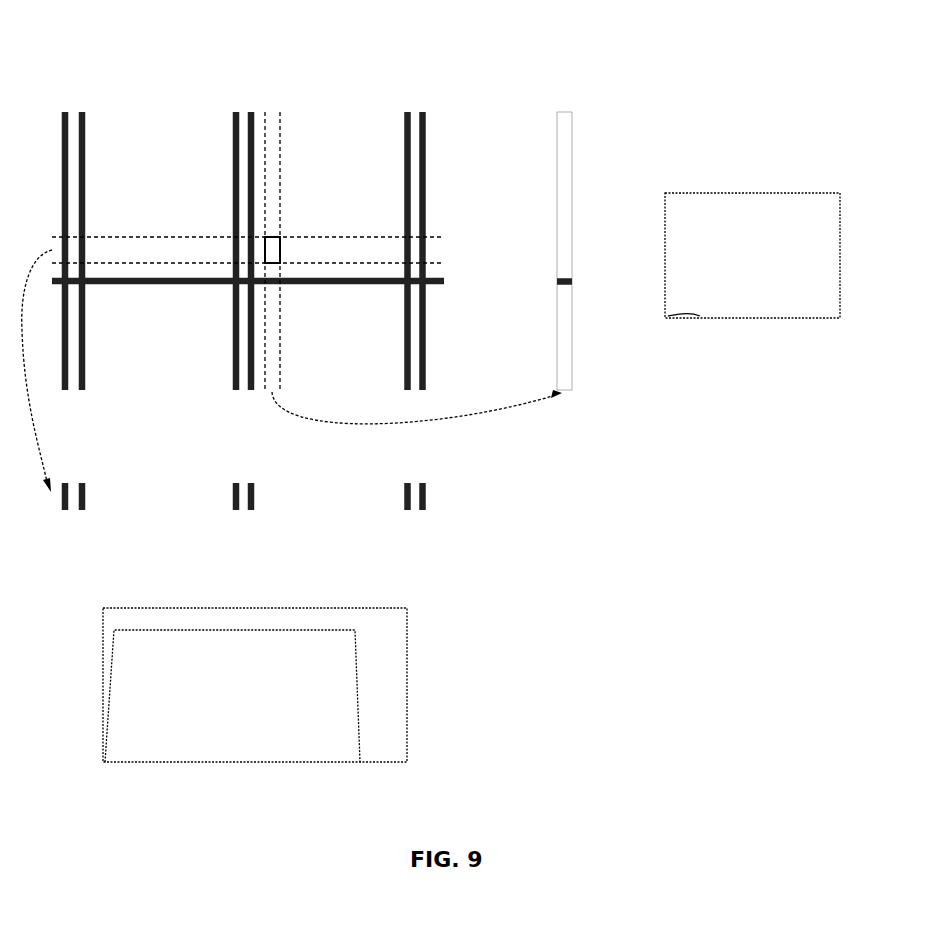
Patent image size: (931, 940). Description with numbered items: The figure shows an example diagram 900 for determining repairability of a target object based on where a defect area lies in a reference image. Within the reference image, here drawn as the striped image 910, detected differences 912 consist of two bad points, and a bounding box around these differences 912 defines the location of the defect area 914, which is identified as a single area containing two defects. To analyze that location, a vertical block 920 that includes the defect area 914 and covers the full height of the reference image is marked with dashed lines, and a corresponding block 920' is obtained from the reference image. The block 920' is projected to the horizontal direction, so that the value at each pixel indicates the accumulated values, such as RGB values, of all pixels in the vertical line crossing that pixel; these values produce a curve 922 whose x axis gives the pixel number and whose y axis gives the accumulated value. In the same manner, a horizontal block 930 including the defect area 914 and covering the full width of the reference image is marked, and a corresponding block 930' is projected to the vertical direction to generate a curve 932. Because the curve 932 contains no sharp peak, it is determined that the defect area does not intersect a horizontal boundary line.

The example diagram 900 is at (194, 29).
The captured image 910 is at (372, 115).
The differences 912 is at (275, 255).
The defect area 914 is at (267, 237).
The block 920 is at (306, 239).
The block 920' is at (460, 256).
The curve 922 is at (697, 315).
The block 930 is at (282, 238).
The block 930' is at (269, 380).
The curve 932 is at (344, 629).